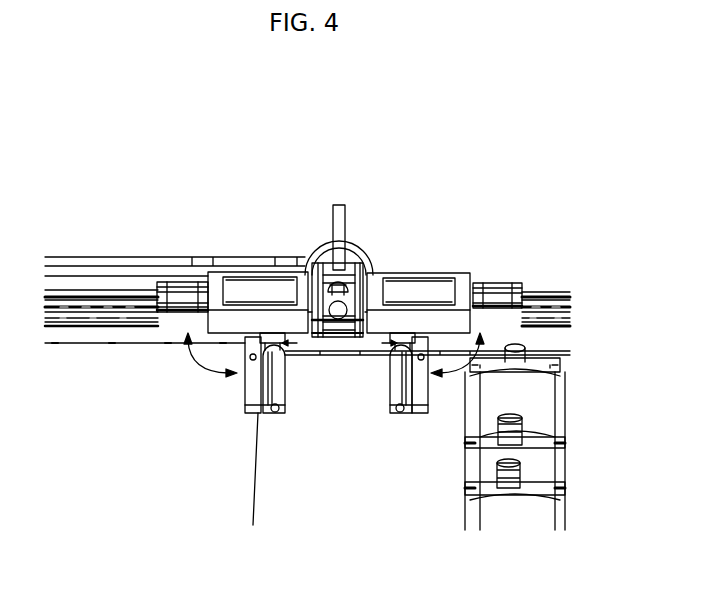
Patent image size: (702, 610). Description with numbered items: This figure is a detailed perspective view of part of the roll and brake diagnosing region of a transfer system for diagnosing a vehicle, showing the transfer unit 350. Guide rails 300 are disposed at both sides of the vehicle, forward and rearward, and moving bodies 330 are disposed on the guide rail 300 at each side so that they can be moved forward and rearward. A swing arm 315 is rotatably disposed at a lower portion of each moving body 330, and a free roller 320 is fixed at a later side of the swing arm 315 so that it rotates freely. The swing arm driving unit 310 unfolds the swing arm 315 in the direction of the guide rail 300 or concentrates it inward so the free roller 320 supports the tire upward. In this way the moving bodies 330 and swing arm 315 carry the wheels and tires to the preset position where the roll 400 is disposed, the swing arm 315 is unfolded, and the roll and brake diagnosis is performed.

The guide rail 300 is at (540, 300).
The swing arm driving unit 310 is at (179, 288).
The swing arm 315 is at (245, 397).
The free roller 320 is at (278, 390).
The moving body 330 is at (253, 283).
The transfer unit 350 is at (356, 184).
The roll 400 is at (488, 420).